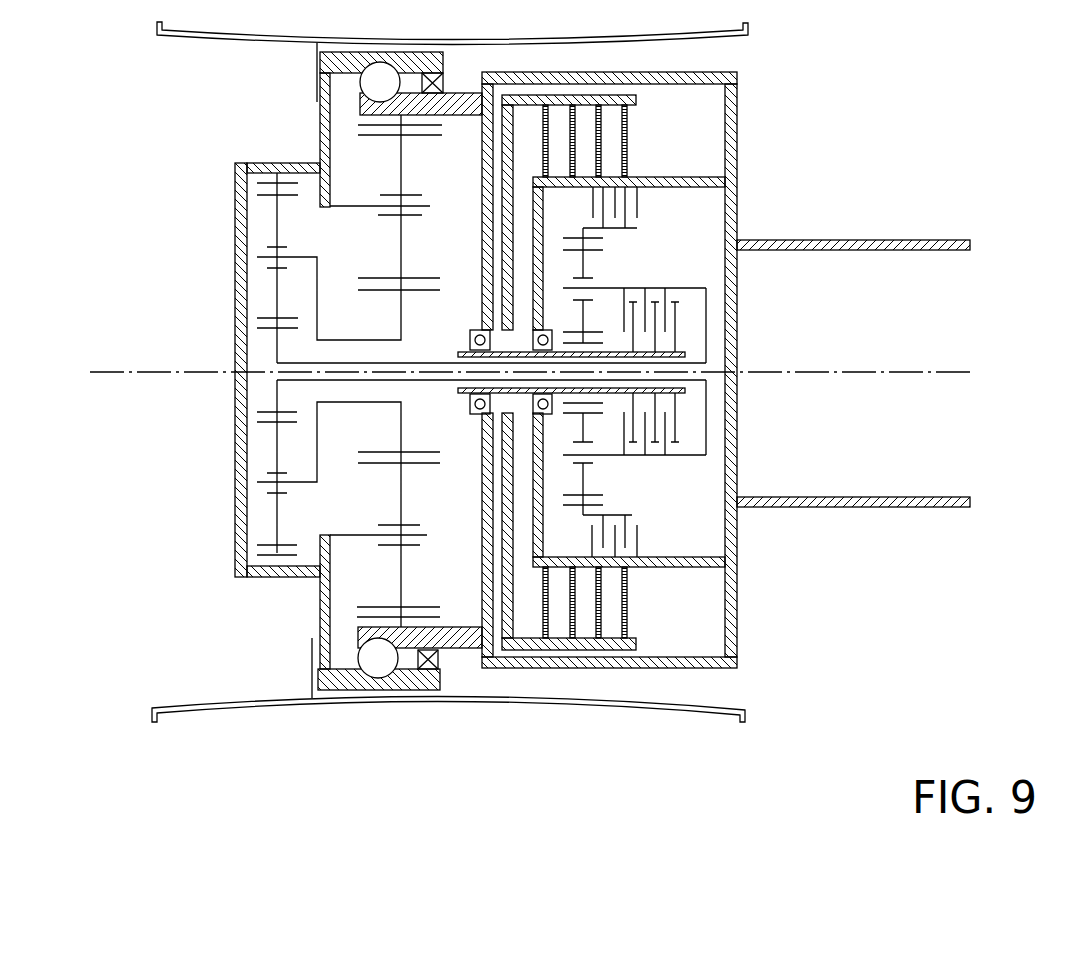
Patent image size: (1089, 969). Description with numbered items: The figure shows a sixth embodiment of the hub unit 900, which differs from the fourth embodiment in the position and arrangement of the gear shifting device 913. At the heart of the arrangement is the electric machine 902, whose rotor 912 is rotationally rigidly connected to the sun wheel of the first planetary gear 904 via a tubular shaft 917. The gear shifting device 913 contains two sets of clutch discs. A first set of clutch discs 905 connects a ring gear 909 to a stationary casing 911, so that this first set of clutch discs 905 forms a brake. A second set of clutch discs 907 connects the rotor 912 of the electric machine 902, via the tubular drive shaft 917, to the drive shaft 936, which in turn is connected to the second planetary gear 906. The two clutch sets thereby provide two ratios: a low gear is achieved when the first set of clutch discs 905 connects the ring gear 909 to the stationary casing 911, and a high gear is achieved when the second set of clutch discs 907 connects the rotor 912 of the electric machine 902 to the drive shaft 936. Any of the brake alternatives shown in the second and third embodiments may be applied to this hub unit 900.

The hub unit 900 is at (387, 740).
The electric machine 902 is at (572, 608).
The first planetary gear 904 is at (572, 517).
The first set of clutch discs 905 is at (650, 535).
The second planetary gear 906 is at (267, 598).
The second set of clutch discs 907 is at (678, 407).
The ring gear 909 is at (613, 517).
The stationary casing 911 is at (670, 568).
The rotor 912 is at (512, 608).
The gear shifting device 913 is at (688, 502).
The tubular shaft 917 is at (658, 390).
The drive shaft 936 is at (305, 382).